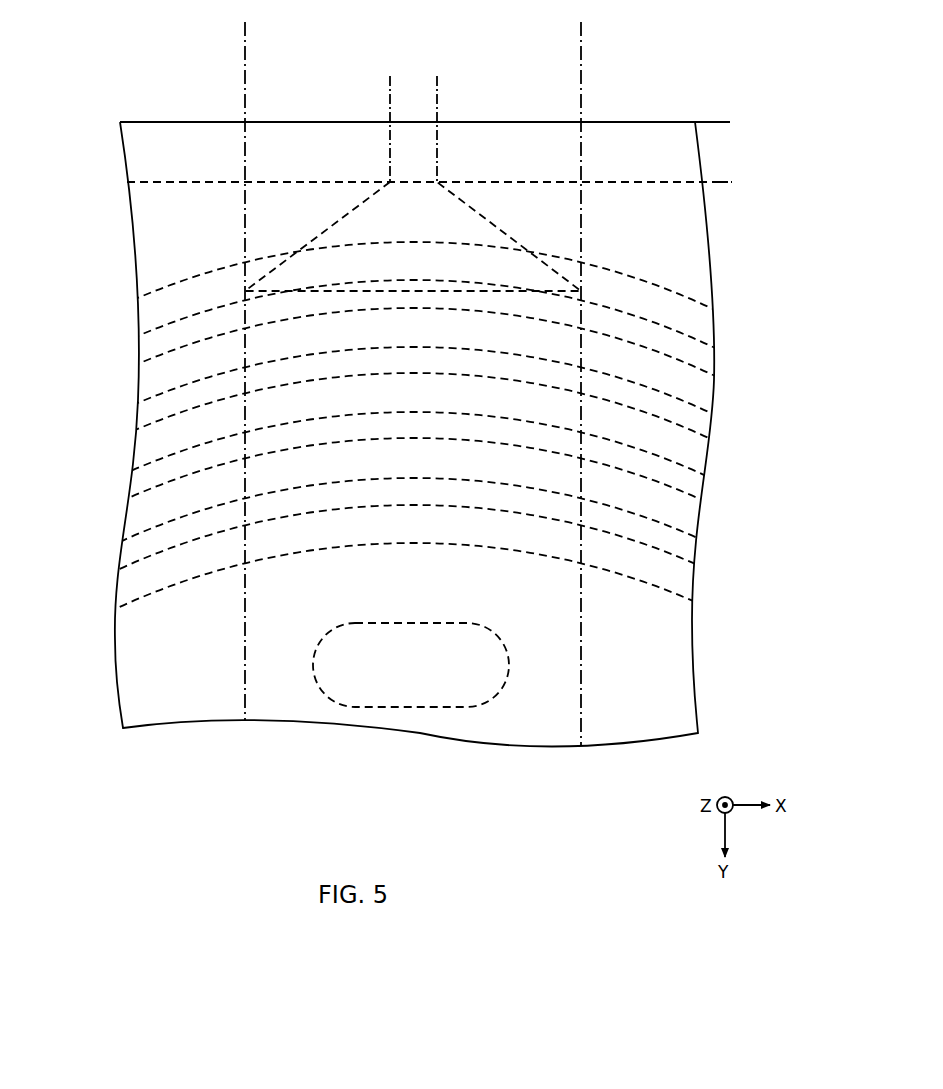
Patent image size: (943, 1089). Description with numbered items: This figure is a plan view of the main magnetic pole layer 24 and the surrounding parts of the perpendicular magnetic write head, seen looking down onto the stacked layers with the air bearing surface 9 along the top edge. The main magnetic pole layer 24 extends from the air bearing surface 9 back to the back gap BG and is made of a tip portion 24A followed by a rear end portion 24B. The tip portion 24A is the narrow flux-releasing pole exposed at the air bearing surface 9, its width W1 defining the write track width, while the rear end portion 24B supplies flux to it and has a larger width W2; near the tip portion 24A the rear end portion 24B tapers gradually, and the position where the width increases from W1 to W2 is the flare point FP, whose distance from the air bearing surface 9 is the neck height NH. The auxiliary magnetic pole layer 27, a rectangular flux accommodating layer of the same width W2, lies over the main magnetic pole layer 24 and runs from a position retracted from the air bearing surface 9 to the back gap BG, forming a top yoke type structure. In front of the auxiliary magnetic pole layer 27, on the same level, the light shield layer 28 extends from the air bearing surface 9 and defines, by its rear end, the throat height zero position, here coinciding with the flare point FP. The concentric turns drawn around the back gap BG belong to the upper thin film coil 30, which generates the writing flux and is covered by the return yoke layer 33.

The air bearing surface 9 is at (521, 113).
The return yoke layer 33 is at (134, 135).
The light shield layer 28 is at (136, 162).
The main magnetic pole layer 24 is at (52, 168).
The tip portion 24A is at (405, 150).
The rear end portion 24B is at (380, 220).
The upper thin film coil 30 is at (166, 311).
The auxiliary magnetic pole layer 27 is at (262, 345).
The back gap BG is at (352, 652).
The width of the tip portion W1 is at (436, 80).
The width of the rear end portion W2 is at (580, 32).
The neck height NH is at (718, 123).
The flare point FP is at (757, 184).